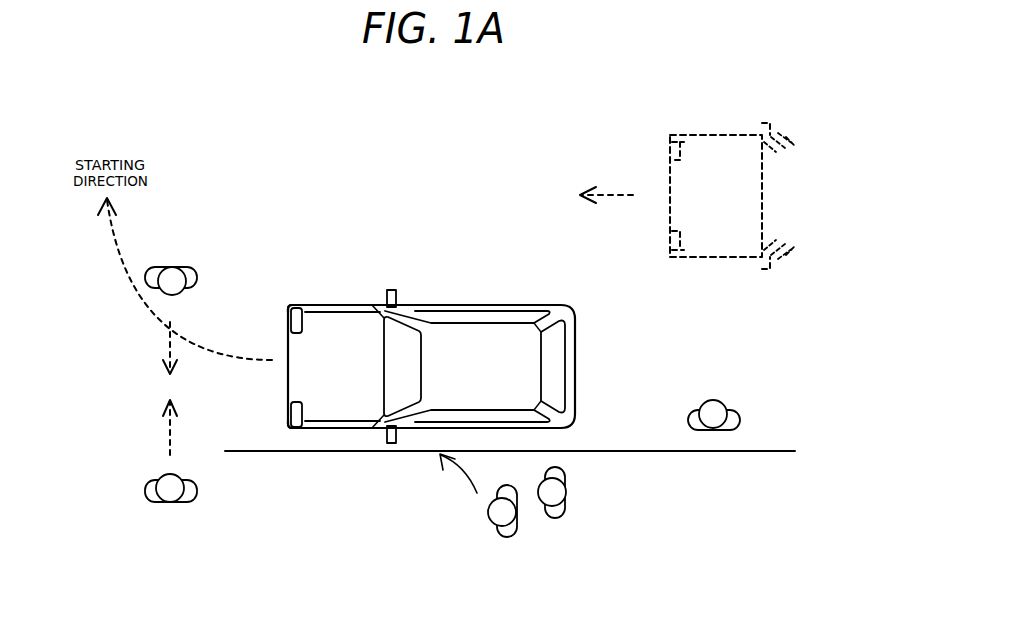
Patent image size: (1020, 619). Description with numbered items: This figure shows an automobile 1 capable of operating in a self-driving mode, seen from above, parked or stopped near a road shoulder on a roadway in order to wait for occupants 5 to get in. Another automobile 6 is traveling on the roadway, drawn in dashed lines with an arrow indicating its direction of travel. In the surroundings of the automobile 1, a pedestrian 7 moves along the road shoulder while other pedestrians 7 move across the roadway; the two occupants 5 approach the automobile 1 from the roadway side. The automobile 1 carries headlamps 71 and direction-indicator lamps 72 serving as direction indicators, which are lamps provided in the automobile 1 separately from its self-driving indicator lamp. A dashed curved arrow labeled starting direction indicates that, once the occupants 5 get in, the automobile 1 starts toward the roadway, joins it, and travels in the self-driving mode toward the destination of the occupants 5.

The automobile 1 is at (472, 278).
The occupants 5 is at (518, 525).
The another automobile 6 is at (700, 138).
The pedestrian 7 is at (183, 267).
The headlamps 71 is at (291, 321).
The direction-indicator lamps 72 is at (291, 306).